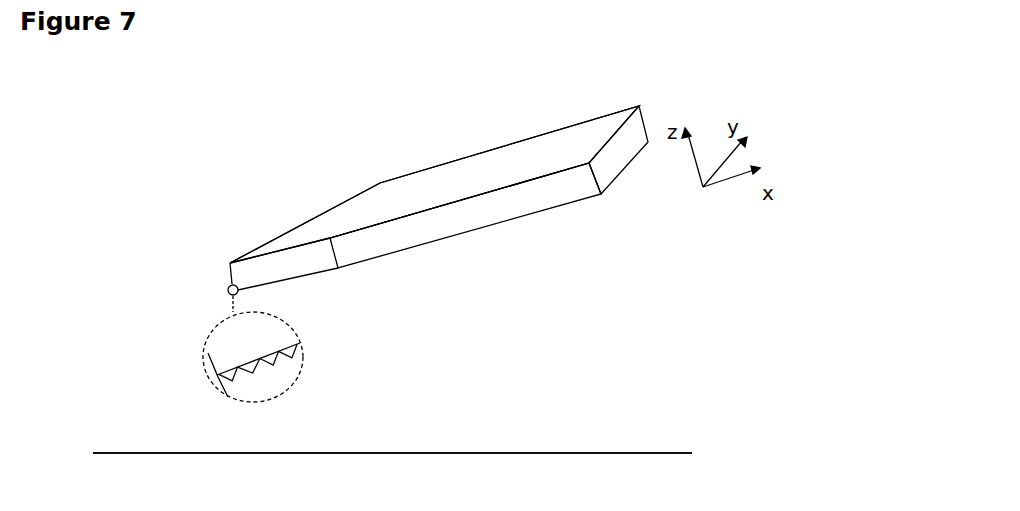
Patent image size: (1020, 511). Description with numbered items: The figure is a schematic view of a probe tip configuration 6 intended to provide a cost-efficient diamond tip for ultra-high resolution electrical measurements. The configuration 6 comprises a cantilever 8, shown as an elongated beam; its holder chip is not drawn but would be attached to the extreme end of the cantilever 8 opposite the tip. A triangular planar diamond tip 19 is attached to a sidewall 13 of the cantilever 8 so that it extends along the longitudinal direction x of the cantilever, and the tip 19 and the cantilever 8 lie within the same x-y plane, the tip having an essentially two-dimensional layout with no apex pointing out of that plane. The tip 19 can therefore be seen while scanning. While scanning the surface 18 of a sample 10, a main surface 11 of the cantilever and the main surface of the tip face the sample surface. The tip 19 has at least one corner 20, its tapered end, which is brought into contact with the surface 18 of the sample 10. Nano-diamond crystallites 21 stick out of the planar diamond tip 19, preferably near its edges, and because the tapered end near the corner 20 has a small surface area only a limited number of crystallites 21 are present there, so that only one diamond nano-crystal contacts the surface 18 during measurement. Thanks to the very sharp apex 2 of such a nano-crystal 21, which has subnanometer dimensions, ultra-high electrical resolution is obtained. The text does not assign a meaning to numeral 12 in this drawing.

The probe tip configuration 6 is at (655, 57).
The cantilever 8 is at (476, 191).
The top surface 12 is at (405, 193).
The sidewall 13 is at (540, 202).
The main surface 11 is at (420, 252).
The planar diamond tip 19 is at (320, 241).
The corner 20 is at (229, 287).
The diamond nano-crystals 21 is at (280, 378).
The sharp apex 2 is at (237, 387).
The surface 18 is at (122, 452).
The sample 10 is at (393, 472).